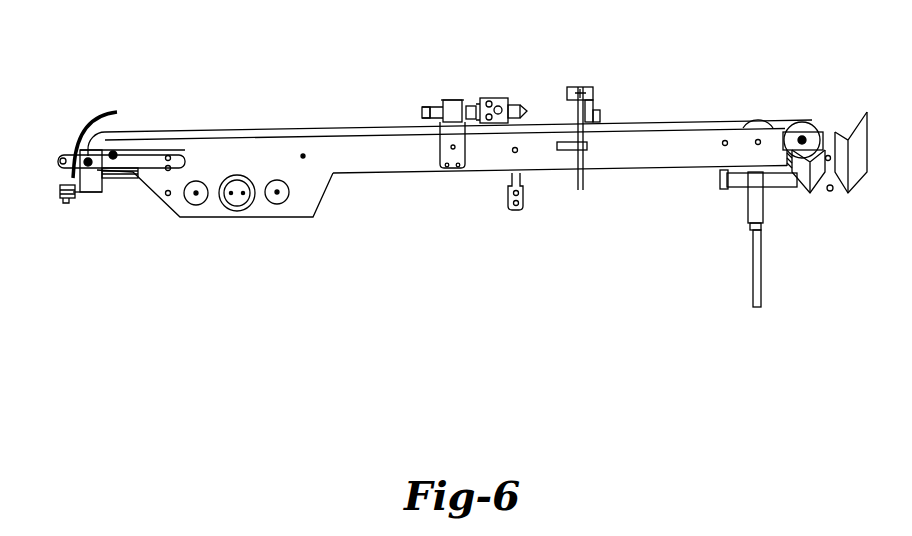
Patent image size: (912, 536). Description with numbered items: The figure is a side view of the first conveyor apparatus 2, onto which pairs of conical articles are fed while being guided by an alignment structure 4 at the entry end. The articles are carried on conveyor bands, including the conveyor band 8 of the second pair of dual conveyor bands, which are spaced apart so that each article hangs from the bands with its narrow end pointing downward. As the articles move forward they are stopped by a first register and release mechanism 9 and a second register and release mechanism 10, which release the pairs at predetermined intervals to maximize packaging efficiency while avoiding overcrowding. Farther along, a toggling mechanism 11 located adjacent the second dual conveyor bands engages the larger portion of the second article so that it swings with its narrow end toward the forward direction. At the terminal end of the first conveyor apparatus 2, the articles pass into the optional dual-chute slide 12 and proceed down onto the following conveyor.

The first conveyor apparatus 2 is at (150, 108).
The alignment structure 4 is at (80, 123).
The dual conveyor band 8 is at (213, 132).
The first register and release mechanism 9 is at (500, 100).
The second register and release mechanism 10 is at (452, 100).
The toggling mechanism 11 is at (588, 100).
The dual-chute slide 12 is at (857, 145).